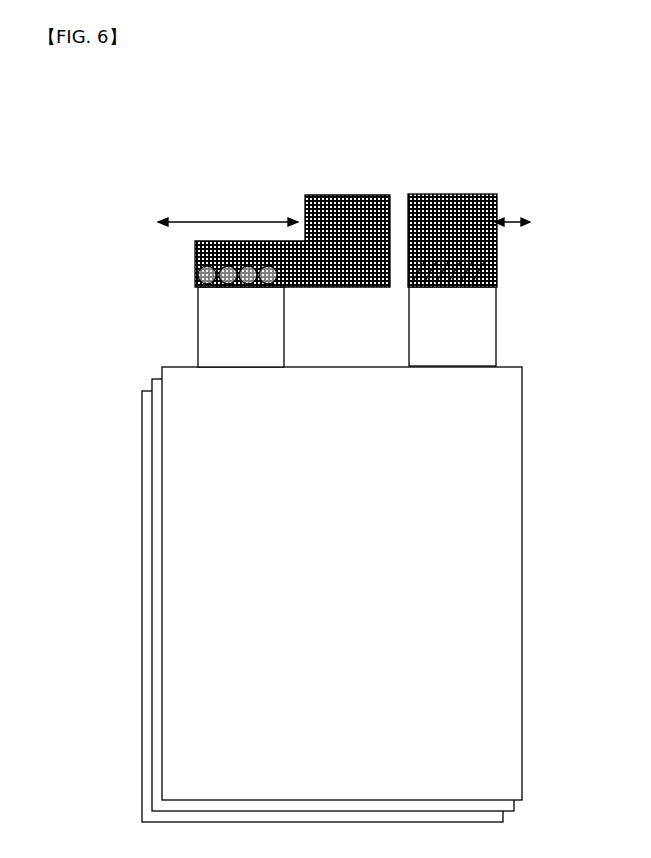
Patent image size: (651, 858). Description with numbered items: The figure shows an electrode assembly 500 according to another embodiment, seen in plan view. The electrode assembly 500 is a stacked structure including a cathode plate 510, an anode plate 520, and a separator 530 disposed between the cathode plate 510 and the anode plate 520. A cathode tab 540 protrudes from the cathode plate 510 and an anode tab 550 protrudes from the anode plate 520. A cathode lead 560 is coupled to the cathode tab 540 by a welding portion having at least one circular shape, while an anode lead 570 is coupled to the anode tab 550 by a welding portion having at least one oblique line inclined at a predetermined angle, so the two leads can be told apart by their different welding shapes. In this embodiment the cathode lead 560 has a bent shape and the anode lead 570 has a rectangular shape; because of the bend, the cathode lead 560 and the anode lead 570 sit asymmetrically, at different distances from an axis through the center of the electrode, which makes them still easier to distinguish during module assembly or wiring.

The electrode assembly 500 is at (316, 480).
The cathode plate 510 is at (172, 542).
The anode plate 520 is at (148, 620).
The separator 530 is at (160, 582).
The cathode tab 540 is at (205, 318).
The anode tab 550 is at (477, 327).
The cathode lead 560 is at (200, 270).
The anode lead 570 is at (478, 240).